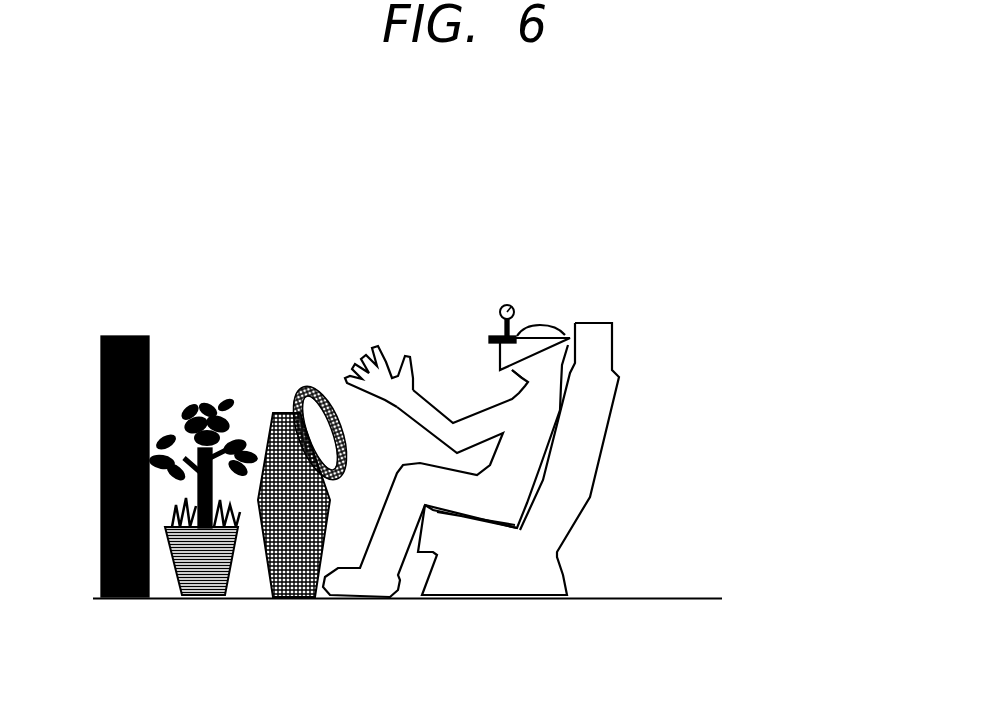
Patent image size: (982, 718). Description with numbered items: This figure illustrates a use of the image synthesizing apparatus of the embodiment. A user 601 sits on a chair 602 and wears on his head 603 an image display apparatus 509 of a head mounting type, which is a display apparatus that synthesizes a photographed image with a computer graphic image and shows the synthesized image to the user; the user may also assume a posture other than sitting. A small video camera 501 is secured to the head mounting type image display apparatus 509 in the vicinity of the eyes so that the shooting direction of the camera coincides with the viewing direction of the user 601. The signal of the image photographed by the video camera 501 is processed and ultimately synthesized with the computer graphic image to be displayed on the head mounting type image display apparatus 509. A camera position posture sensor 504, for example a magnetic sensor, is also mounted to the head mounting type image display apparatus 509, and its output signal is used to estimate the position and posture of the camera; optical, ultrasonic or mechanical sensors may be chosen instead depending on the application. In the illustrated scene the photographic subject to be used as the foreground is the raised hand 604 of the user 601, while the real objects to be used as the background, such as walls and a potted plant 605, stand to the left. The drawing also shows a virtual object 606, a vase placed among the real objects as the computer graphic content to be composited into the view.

The video camera 501 is at (495, 336).
The camera position posture sensor 504 is at (512, 305).
The image display apparatus of a head mounting type 509 is at (535, 345).
The user 601 is at (540, 420).
The chair 602 is at (598, 348).
The head 603 is at (545, 345).
The hand 604 is at (393, 383).
The real objects 605 is at (153, 321).
The virtual object 606 is at (315, 382).